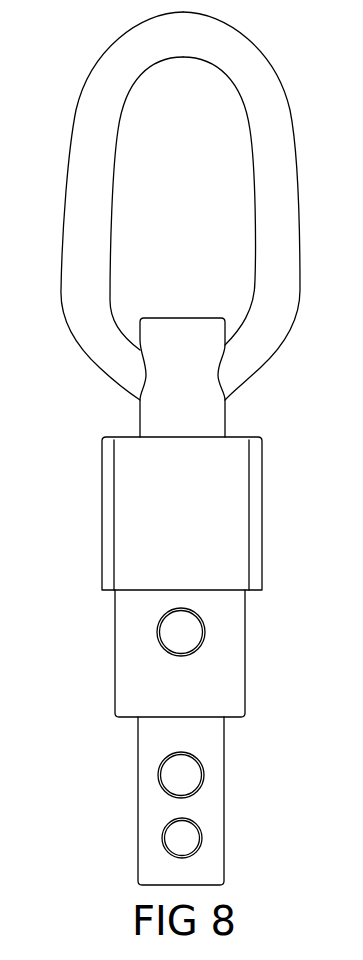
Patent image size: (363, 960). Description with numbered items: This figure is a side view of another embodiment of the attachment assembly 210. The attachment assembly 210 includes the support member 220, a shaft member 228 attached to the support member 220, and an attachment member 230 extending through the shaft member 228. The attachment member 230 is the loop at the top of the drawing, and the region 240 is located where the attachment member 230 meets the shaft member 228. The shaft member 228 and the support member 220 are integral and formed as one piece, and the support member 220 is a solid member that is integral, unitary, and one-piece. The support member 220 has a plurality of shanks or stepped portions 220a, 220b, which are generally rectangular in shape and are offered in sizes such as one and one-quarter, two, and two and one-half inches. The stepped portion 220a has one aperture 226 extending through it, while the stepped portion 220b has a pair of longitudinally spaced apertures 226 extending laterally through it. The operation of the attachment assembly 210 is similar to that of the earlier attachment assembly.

The attachment assembly 210 is at (305, 52).
The attachment member 230 is at (82, 167).
The shaft member 228 is at (152, 418).
The ring end / junction 240 is at (218, 368).
The support member 220 is at (262, 503).
The stepped portion 220a is at (230, 670).
The stepped portion 220b is at (207, 813).
The aperture 226 is at (180, 632).